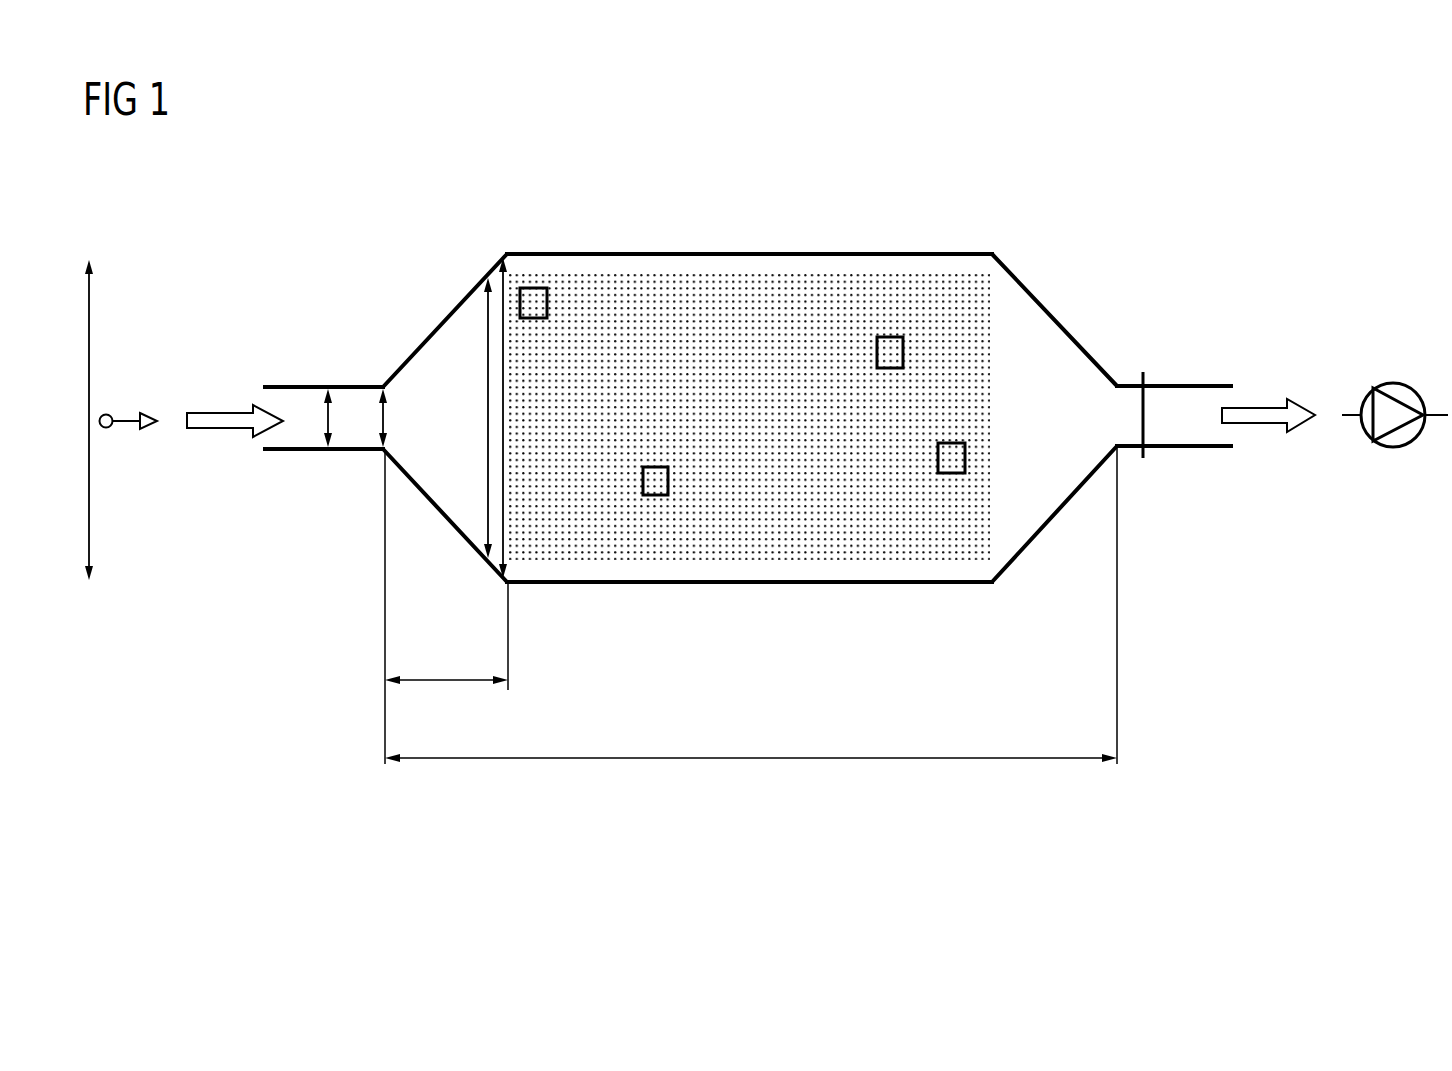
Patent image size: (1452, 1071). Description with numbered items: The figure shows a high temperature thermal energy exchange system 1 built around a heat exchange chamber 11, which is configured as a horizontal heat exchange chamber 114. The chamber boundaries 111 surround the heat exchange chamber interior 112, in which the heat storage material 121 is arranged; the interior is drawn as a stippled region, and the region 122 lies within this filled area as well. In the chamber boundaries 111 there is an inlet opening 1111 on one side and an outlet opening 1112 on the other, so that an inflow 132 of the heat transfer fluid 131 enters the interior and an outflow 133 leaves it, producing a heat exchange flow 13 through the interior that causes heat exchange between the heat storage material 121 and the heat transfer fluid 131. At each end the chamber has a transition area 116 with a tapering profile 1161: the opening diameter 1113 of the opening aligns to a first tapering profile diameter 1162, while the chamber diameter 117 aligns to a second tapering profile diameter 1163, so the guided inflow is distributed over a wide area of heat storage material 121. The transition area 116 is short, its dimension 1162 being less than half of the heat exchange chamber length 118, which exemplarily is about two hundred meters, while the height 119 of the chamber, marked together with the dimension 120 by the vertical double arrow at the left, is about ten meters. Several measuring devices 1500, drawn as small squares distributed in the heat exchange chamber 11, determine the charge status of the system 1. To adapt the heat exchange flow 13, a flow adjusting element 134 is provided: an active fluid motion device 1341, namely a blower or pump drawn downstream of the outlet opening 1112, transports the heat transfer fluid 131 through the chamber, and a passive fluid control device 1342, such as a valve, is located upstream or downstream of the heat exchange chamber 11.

The high temperature thermal energy exchange system 1 is at (1216, 139).
The heat exchange chamber 11 is at (748, 387).
The horizontal heat exchange chamber 114 is at (1000, 206).
The chamber boundaries 111 is at (1000, 262).
The heat exchange chamber interior 112 is at (776, 265).
The transition area 116 is at (765, 427).
The tapering profile 1161 is at (432, 287).
The first tapering profile diameter 1162 is at (388, 423).
The second tapering profile diameter 1163 is at (486, 381).
The chamber diameter 117 is at (503, 460).
The length of the heat exchange chamber 118 is at (760, 762).
The height of the heat exchange chamber 119 is at (157, 420).
The reference height 120 is at (90, 296).
The inlet opening 1111 is at (350, 388).
The outlet opening 1112 is at (1188, 388).
The opening diameter 1113 is at (313, 451).
The heat exchange flow 13 is at (540, 546).
The heat transfer fluid 131 is at (227, 391).
The inflow 132 is at (220, 415).
The outflow 133 is at (1258, 412).
The flow adjusting element 134 is at (775, 404).
The active fluid motion device 1341 is at (1388, 384).
The passive fluid control device 1342 is at (1146, 454).
The heat storage material 121 is at (775, 525).
The second filter region 122 is at (880, 548).
The measuring devices 1500 is at (538, 288).